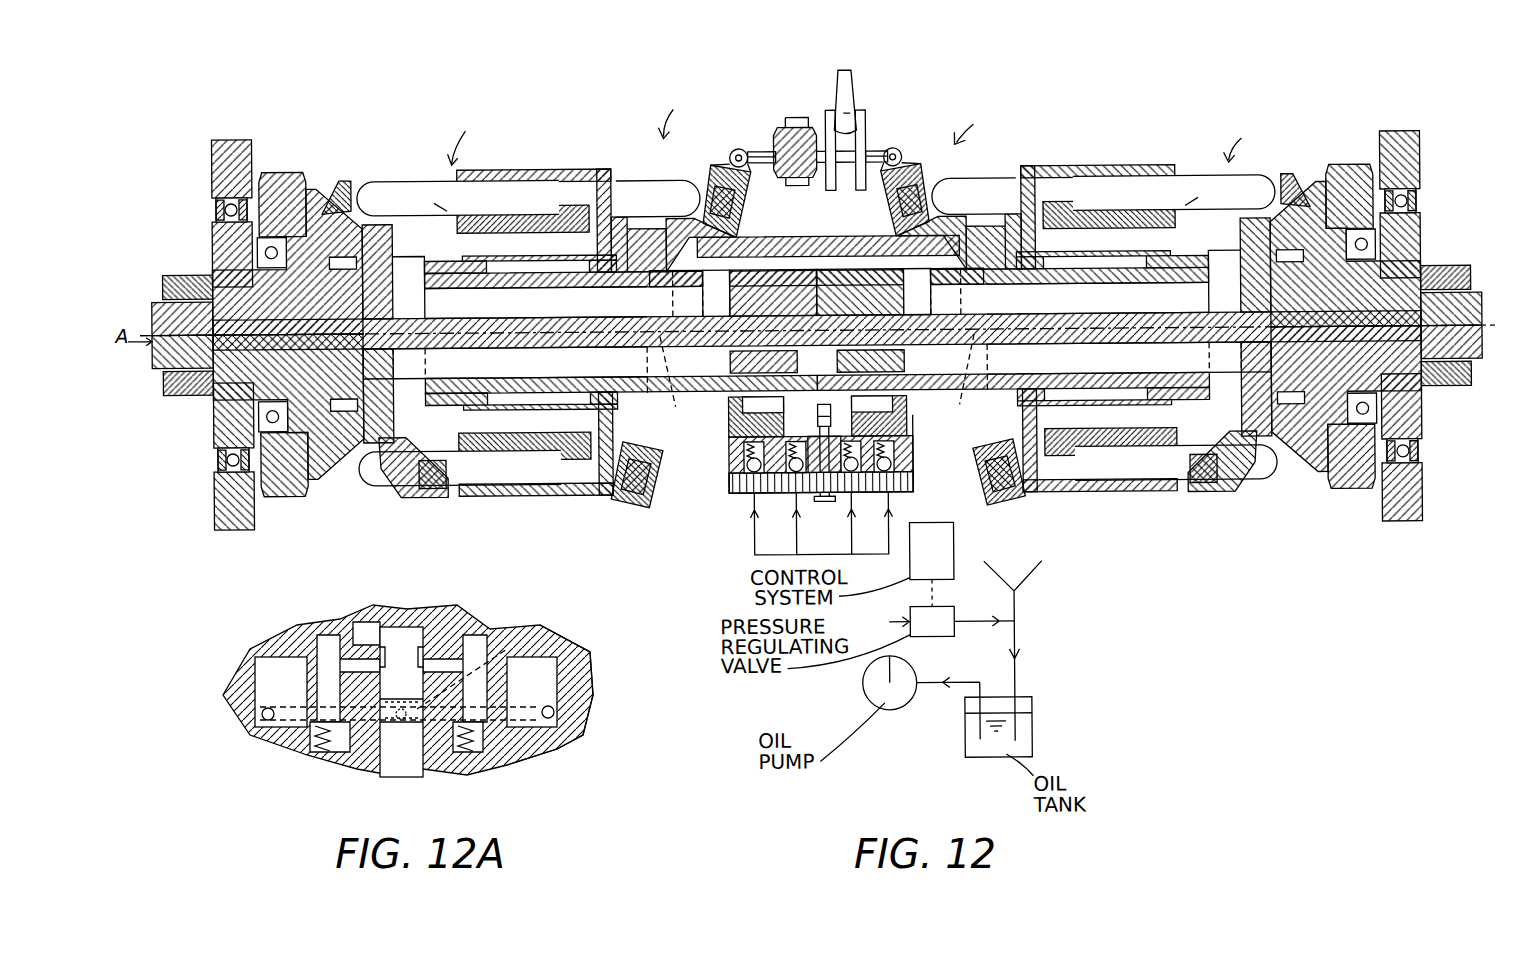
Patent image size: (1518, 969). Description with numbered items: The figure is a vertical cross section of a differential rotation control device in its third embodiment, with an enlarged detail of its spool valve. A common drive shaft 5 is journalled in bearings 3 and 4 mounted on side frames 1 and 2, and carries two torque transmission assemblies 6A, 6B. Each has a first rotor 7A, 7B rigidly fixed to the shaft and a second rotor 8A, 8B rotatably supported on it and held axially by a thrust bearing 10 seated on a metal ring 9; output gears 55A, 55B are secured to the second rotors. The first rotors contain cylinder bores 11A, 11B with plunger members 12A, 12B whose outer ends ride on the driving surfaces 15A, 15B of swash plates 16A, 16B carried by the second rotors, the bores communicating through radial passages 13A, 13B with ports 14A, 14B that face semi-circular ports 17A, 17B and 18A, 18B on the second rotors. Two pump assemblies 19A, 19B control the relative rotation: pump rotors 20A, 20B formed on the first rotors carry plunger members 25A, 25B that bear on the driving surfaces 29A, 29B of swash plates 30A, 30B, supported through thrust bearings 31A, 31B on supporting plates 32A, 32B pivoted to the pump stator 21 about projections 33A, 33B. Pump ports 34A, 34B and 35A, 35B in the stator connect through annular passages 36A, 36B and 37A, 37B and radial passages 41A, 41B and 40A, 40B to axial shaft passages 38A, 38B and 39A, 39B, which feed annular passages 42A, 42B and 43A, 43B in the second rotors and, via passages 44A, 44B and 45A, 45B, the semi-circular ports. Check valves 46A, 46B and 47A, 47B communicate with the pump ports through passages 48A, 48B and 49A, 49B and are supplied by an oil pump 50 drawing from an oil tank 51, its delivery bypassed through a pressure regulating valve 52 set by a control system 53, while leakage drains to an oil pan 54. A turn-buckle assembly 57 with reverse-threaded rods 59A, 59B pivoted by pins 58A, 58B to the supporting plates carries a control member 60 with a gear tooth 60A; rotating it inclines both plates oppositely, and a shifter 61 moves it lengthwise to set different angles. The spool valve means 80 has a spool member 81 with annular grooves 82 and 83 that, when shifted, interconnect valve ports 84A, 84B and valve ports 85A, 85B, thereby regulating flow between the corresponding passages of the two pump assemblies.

In FIG. 12, the side frame 1 is at (213, 160).
In FIG. 12, the side frame 2 is at (1412, 155).
In FIG. 12, the bearing 3 is at (217, 213).
In FIG. 12, the bearing 4 is at (1417, 210).
In FIG. 12, the common drive shaft 5 is at (152, 365).
In FIG. 12, the metal ring 9 is at (213, 258).
In FIG. 12, the thrust bearing 10 is at (340, 250).
In FIG. 12, the torque transmission assembly 6A is at (486, 131).
In FIG. 12, the torque transmission assembly 6B is at (1260, 148).
In FIG. 12, the first rotor 7A is at (530, 183).
In FIG. 12, the first rotor 7B is at (1104, 183).
In FIG. 12, the second rotor 8A is at (322, 450).
In FIG. 12, the second rotor 8B is at (1262, 450).
In FIG. 12, the cylinder bore 11A is at (546, 190).
In FIG. 12, the cylinder bore 11B is at (1087, 190).
In FIG. 12, the plunger member 12A is at (395, 190).
In FIG. 12, the plunger member 12B is at (1240, 190).
In FIG. 12, the radially extending passage 13A is at (605, 195).
In FIG. 12, the radially extending passage 13B is at (1029, 185).
In FIG. 12, the port 14A is at (500, 222).
In FIG. 12, the port 14B is at (1150, 222).
In FIG. 12, the driving surface 15A is at (347, 184).
In FIG. 12, the driving surface 15B is at (1287, 184).
In FIG. 12, the swash plate 16A is at (432, 492).
In FIG. 12, the swash plate 16B is at (1200, 492).
In FIG. 12, the semi-circular port 17A is at (424, 202).
In FIG. 12, the semi-circular port 17B is at (1214, 197).
In FIG. 12, the semi-circular port 18A is at (458, 430).
In FIG. 12, the semi-circular port 18B is at (1180, 430).
In FIG. 12, the pump assembly 19A is at (698, 114).
In FIG. 12, the pump assembly 19B is at (960, 132).
In FIG. 12, the pump rotor 20A is at (548, 498).
In FIG. 12, the pump rotor 20B is at (1070, 498).
In FIG. 12, the pump stator 21 is at (830, 241).
In FIG. 12, the plunger member 25A is at (670, 222).
In FIG. 12, the plunger member 25B is at (967, 222).
In FIG. 12, the driving surface 29A is at (716, 190).
In FIG. 12, the driving surface 29B is at (922, 190).
In FIG. 12, the swash plate 30A is at (633, 503).
In FIG. 12, the swash plate 30B is at (1003, 503).
In FIG. 12, the thrust bearing 31A is at (740, 218).
In FIG. 12, the thrust bearing 31B is at (897, 218).
In FIG. 12, the supporting plate 32A is at (660, 492).
In FIG. 12, the supporting plate 32B is at (975, 492).
In FIG. 12, the projection 33A is at (647, 303).
In FIG. 12, the projection 33B is at (926, 298).
In FIG. 12, the pump port 34A is at (658, 198).
In FIG. 12, the pump port 34B is at (974, 196).
In FIG. 12, the pump port 35A is at (590, 380).
In FIG. 12, the pump port 35B is at (1030, 425).
In FIG. 12, the annular passage 36A is at (620, 251).
In FIG. 12, the annular passage 36B is at (995, 295).
In FIG. 12, the annular passage 37A is at (732, 280).
In FIG. 12, the annular passage 37B is at (912, 450).
In FIG. 12, the axial passage 38A is at (512, 313).
In FIG. 12, the axial passage 38B is at (1082, 315).
In FIG. 12, the axial passage 39A is at (470, 373).
In FIG. 12, the axial passage 39B is at (1087, 376).
In FIG. 12, the radially extending passage 40A is at (647, 375).
In FIG. 12, the radially extending passage 40B is at (992, 375).
In FIG. 12, the radially extending passage 41A is at (773, 292).
In FIG. 12, the radially extending passage 41B is at (874, 292).
In FIG. 12, the annular passage 42A is at (420, 285).
In FIG. 12, the annular passage 42B is at (1214, 285).
In FIG. 12, the annular passage 43A is at (363, 395).
In FIG. 12, the annular passage 43B is at (1271, 395).
In FIG. 12, the passage 44A is at (395, 252).
In FIG. 12, the passage 44B is at (1250, 252).
In FIG. 12, the passage 45A is at (392, 462).
In FIG. 12, the passage 45B is at (1242, 465).
In FIG. 12, the check valve 46A is at (765, 515).
In FIG. 12, the check valve 46B is at (855, 515).
In FIG. 12, the check valve 47A is at (728, 466).
In FIG. 12, the check valve 47B is at (912, 475).
In FIG. 12A, the passage 48A is at (335, 650).
In FIG. 12, the passage 48B is at (818, 364).
In FIG. 12A, the passage 48B is at (470, 650).
In FIG. 12, the passage 49A is at (755, 416).
In FIG. 12A, the passage 49A is at (258, 699).
In FIG. 12, the passage 49B is at (878, 415).
In FIG. 12A, the passage 49B is at (553, 732).
In FIG. 12, the oil pump 50 is at (860, 700).
In FIG. 12, the oil tank 51 is at (1029, 732).
In FIG. 12, the pressure regulating valve 52 is at (918, 638).
In FIG. 12, the control system 53 is at (916, 570).
In FIG. 12, the oil pan 54 is at (1024, 585).
In FIG. 12, the output gear 55A is at (290, 173).
In FIG. 12, the output gear 55B is at (1344, 173).
In FIG. 12, the turn-buckle assembly 57 is at (875, 120).
In FIG. 12, the pivot pin 58A is at (735, 153).
In FIG. 12, the pivot pin 58B is at (905, 160).
In FIG. 12, the rod 59A is at (760, 155).
In FIG. 12, the rod 59B is at (880, 156).
In FIG. 12, the control member 60 is at (790, 128).
In FIG. 12, the gear tooth 60A is at (798, 122).
In FIG. 12, the shifter 61 is at (855, 95).
In FIG. 12, the spool valve means 80 is at (824, 429).
In FIG. 12A, the spool valve means 80 is at (378, 780).
In FIG. 12A, the spool member 81 is at (403, 765).
In FIG. 12A, the annular groove 82 is at (352, 625).
In FIG. 12A, the annular groove 83 is at (425, 710).
In FIG. 12A, the valve port 84A is at (330, 660).
In FIG. 12A, the valve port 84B is at (440, 655).
In FIG. 12A, the valve port 85A is at (297, 752).
In FIG. 12A, the valve port 85B is at (535, 662).